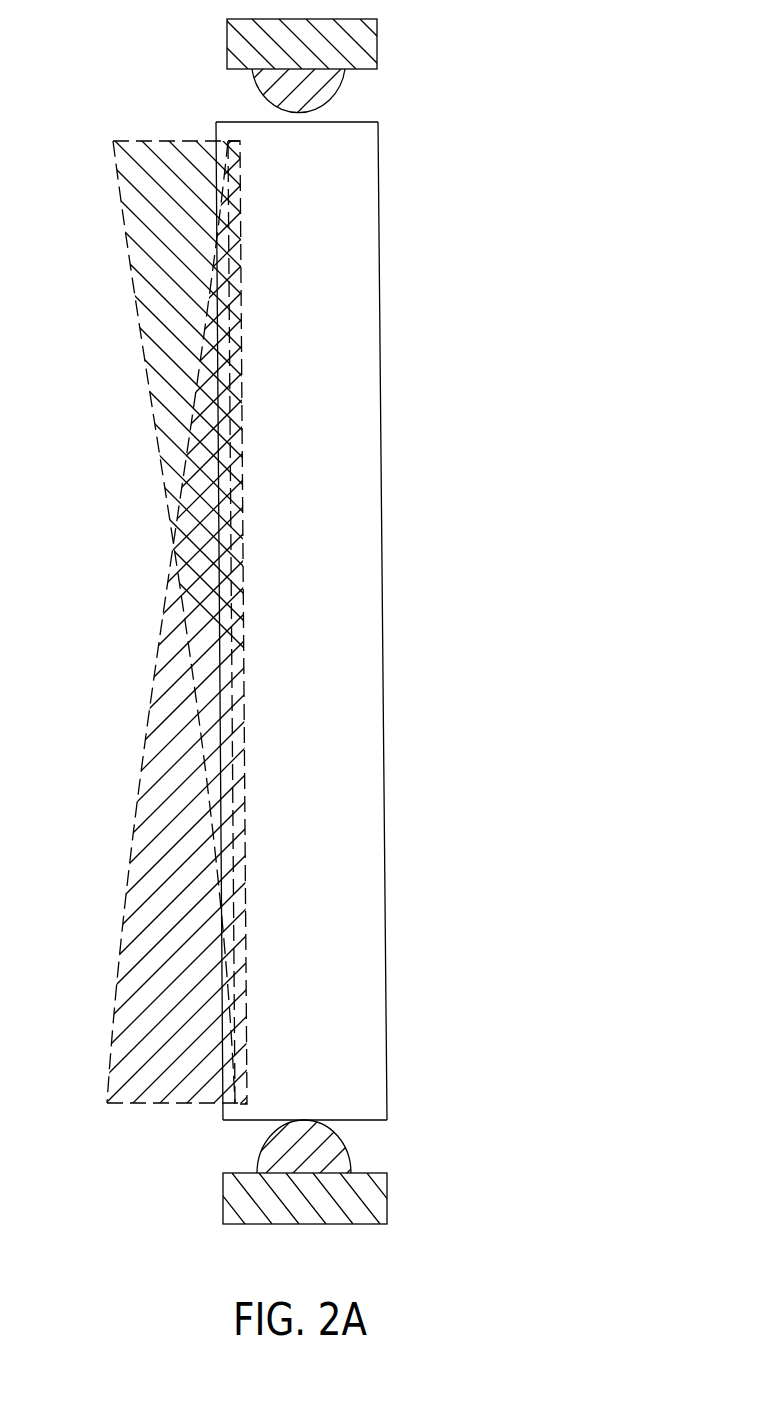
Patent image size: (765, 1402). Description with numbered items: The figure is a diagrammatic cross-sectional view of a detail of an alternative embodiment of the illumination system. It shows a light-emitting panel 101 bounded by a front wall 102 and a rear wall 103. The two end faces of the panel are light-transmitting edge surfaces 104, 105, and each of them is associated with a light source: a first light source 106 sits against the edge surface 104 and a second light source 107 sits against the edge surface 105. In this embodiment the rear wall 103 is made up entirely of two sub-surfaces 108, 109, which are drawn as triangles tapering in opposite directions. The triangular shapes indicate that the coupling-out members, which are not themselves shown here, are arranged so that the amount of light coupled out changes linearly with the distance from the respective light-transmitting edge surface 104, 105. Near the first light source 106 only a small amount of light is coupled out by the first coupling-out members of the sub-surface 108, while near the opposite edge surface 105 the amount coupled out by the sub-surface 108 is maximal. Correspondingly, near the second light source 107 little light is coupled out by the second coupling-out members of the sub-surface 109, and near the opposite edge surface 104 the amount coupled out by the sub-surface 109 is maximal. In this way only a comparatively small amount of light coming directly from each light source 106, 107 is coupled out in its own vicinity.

The light-emitting panel 101 is at (382, 649).
The front wall 102 is at (385, 932).
The rear wall 103 is at (226, 969).
The light-transmitting edge surface 104 is at (356, 122).
The light-transmitting edge surface 105 is at (363, 1120).
The first light source 106 is at (318, 92).
The second light source 107 is at (282, 1152).
The sub-surface 108 is at (165, 926).
The sub-surface 109 is at (158, 256).